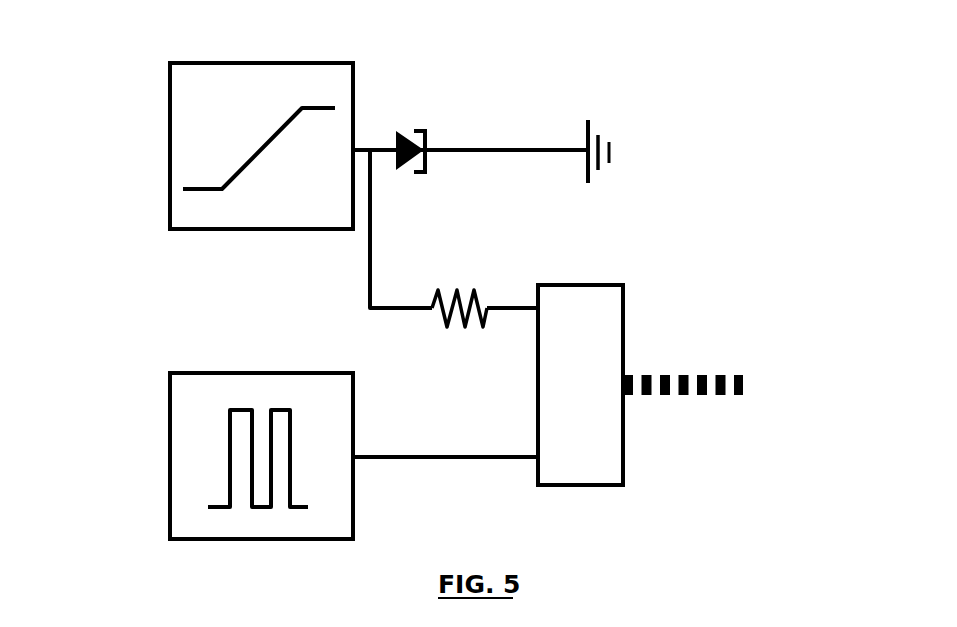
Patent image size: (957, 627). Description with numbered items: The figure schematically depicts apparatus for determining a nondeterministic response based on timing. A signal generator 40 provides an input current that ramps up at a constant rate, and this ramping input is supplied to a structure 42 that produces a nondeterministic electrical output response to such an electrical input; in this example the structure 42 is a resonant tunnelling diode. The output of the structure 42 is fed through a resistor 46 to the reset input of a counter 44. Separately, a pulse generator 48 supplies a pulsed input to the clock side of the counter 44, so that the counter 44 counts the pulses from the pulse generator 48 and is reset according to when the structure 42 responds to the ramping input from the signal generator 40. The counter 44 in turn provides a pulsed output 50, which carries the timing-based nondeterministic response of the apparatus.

The signal generator 40 is at (168, 88).
The structure 42 is at (418, 117).
The counter 44 is at (608, 273).
The resistor 46 is at (455, 280).
The pulse generator 48 is at (168, 398).
The pulsed output 50 is at (718, 365).